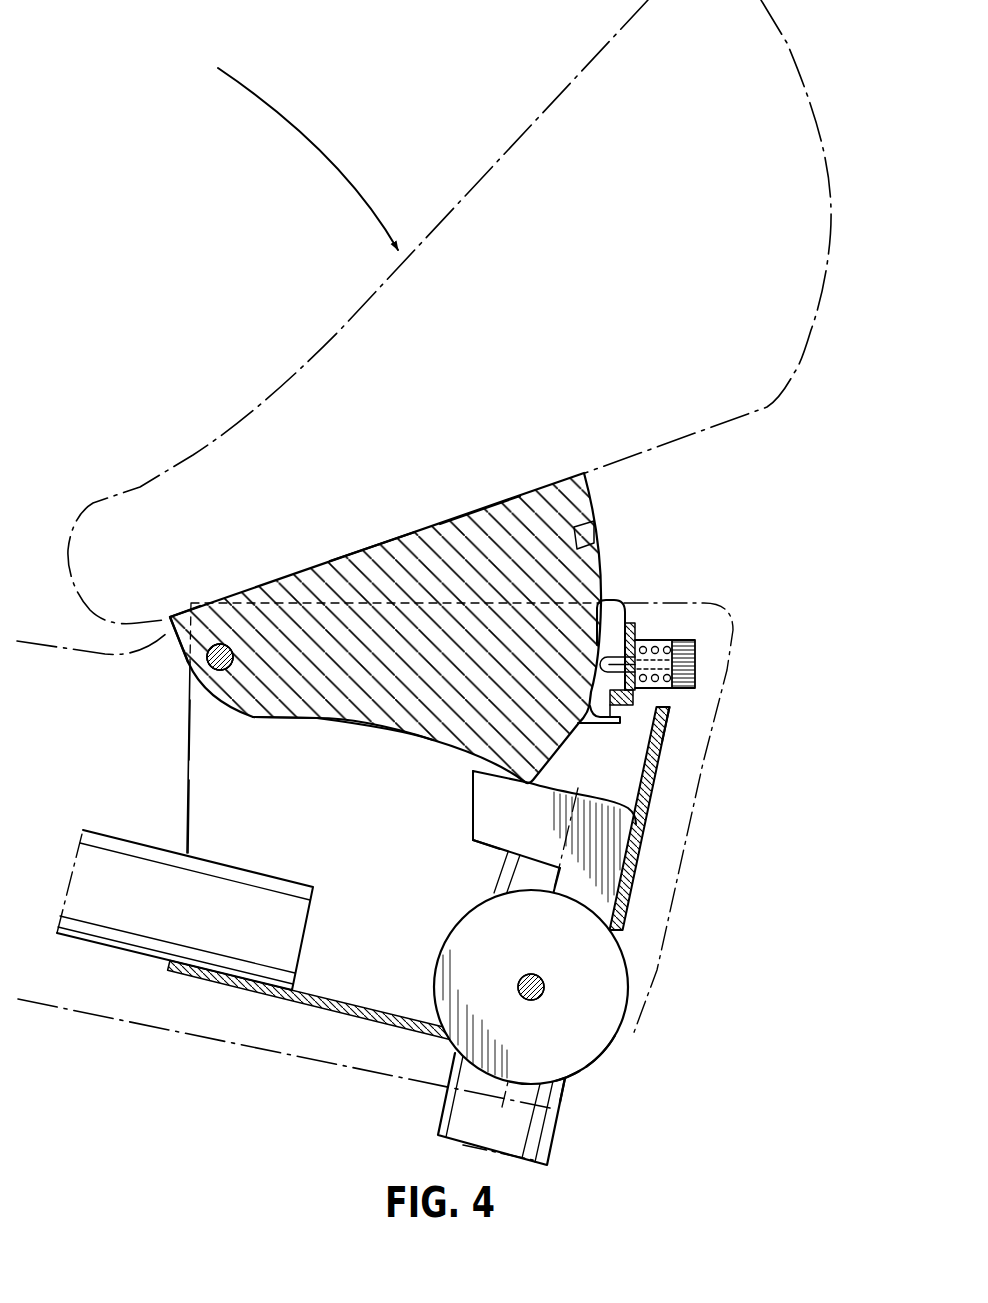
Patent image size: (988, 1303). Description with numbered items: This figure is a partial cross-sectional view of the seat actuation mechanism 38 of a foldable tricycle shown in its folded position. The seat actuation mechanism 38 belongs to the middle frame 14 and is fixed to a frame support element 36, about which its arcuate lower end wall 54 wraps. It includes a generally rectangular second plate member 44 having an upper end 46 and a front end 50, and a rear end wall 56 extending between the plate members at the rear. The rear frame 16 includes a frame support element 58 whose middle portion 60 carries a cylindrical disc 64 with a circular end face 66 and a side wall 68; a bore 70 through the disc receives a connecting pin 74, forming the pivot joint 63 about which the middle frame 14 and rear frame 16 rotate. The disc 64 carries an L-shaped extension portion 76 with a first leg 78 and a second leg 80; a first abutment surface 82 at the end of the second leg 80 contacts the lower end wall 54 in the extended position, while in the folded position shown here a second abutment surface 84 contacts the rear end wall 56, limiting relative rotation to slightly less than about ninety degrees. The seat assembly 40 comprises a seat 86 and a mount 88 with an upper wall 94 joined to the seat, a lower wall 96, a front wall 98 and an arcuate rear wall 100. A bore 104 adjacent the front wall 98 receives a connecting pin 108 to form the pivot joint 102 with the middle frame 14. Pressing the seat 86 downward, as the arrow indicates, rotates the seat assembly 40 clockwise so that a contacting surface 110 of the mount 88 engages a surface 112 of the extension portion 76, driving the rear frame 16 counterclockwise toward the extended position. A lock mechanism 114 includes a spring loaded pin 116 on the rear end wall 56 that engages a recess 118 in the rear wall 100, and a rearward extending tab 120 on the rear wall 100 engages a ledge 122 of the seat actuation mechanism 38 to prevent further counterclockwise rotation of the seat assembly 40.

The middle frame 14 is at (110, 952).
The rear frame 16 is at (444, 1102).
The frame support element 36 is at (113, 845).
The seat actuation mechanism 38 is at (189, 730).
The seat assembly 40 is at (347, 319).
The second plate member 44 is at (222, 822).
The upper end 46 is at (318, 603).
The front end 50 is at (190, 763).
The lower end wall 54 is at (222, 978).
The rear end wall 56 is at (653, 790).
The frame support element 58 is at (544, 1138).
The middle portion 60 is at (564, 1084).
The pivot joint 63 is at (596, 1076).
The cylindrical disc 64 is at (631, 1010).
The end face 66 is at (544, 1048).
The side wall 68 is at (618, 1037).
The bore 70 is at (535, 979).
The connecting pin 74 is at (527, 982).
The extension portion 76 is at (471, 841).
The first leg 78 is at (579, 884).
The second leg 80 is at (492, 824).
The first abutment surface 82 is at (471, 813).
The second abutment surface 84 is at (637, 875).
The seat 86 is at (517, 135).
The mount 88 is at (483, 508).
The upper wall 94 is at (372, 547).
The lower wall 96 is at (373, 727).
The front wall 98 is at (173, 645).
The rear wall 100 is at (573, 740).
The pivot joint 102 is at (164, 664).
The bore 104 is at (232, 642).
The connecting pin 108 is at (219, 643).
The contacting surface 110 is at (576, 847).
The surface 112 is at (557, 790).
The lock mechanism 114 is at (709, 662).
The spring loaded pin 116 is at (628, 663).
The recess 118 is at (596, 533).
The rearward extending tab 120 is at (655, 742).
The ledge 122 is at (658, 716).